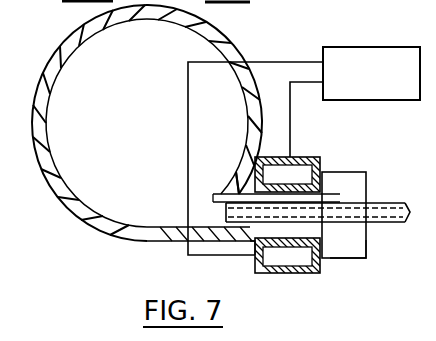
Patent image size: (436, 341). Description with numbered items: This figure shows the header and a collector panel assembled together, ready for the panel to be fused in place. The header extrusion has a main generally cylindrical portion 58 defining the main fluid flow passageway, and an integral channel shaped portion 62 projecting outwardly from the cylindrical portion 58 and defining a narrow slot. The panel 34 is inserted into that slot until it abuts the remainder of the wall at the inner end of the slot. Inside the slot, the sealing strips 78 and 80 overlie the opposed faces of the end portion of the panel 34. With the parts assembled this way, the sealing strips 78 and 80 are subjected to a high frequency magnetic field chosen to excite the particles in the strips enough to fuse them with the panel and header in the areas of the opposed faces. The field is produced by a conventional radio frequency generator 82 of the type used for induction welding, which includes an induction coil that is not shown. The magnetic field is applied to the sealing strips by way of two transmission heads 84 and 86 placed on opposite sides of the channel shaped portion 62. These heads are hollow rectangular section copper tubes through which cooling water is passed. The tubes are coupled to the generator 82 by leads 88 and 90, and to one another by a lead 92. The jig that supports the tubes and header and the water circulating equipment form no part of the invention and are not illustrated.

The main generally cylindrical portion 58 is at (72, 213).
The radio frequency generator 82 is at (380, 51).
The lead 88 is at (289, 60).
The lead 90 is at (292, 100).
The transmission head 84 is at (322, 158).
The transmission head 86 is at (322, 272).
The channel shaped portion 62 is at (343, 184).
The lead 92 is at (367, 247).
The panel 34 is at (388, 203).
The sealing strip 78 is at (240, 188).
The sealing strip 80 is at (254, 254).